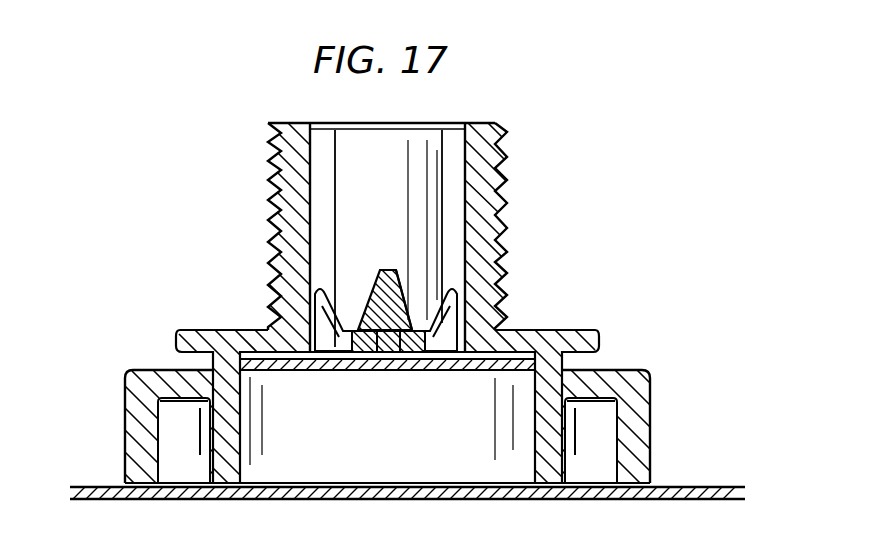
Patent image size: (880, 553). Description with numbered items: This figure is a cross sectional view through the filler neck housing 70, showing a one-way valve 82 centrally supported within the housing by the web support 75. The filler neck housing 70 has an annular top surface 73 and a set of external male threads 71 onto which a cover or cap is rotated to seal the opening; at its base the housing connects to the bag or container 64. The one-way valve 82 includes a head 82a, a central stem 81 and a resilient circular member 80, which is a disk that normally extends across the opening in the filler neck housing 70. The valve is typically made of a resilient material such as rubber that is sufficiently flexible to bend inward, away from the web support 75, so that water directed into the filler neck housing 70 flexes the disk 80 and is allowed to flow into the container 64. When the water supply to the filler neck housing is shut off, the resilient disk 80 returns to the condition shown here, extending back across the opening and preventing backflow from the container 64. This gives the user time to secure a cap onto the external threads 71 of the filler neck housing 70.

The bag or container 64 is at (700, 486).
The filler neck housing 70 is at (553, 140).
The external male threads 71 is at (507, 196).
The annular top surface 73 is at (482, 125).
The web support 75 is at (343, 333).
The resilient circular member 80 is at (462, 352).
The central stem 81 is at (316, 342).
The one-way valve 82 is at (367, 305).
The head 82a is at (405, 318).